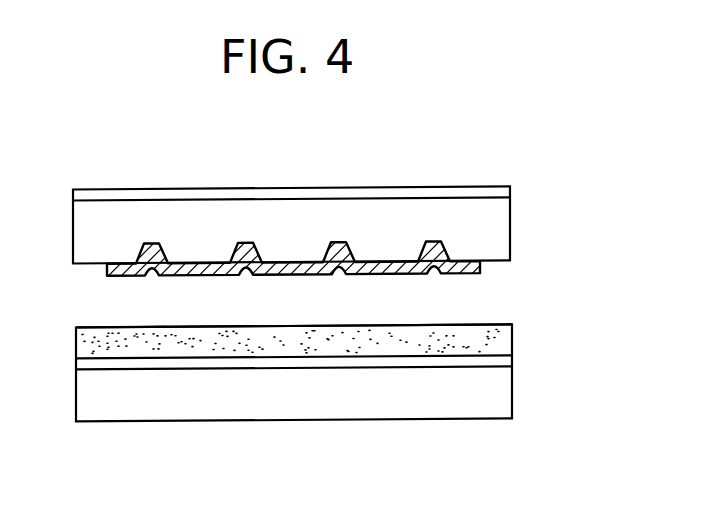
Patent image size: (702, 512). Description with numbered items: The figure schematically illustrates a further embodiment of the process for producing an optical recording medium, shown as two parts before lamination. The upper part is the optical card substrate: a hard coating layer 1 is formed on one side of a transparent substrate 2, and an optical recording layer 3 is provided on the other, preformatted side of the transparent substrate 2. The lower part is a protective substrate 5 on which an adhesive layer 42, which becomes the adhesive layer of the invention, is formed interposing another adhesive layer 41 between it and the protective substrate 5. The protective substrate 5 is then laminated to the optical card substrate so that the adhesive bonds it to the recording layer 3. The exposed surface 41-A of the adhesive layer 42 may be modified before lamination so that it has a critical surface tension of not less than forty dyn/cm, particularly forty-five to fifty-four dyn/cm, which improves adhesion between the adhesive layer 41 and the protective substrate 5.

The hard coating layer 1 is at (483, 193).
The transparent substrate 2 is at (505, 215).
The optical recording layer 3 is at (482, 265).
The protective substrate 5 is at (502, 388).
The adhesive layer 41 is at (503, 360).
The adhesive layer 42 is at (498, 330).
The surface of the adhesive layer 41-A is at (153, 324).